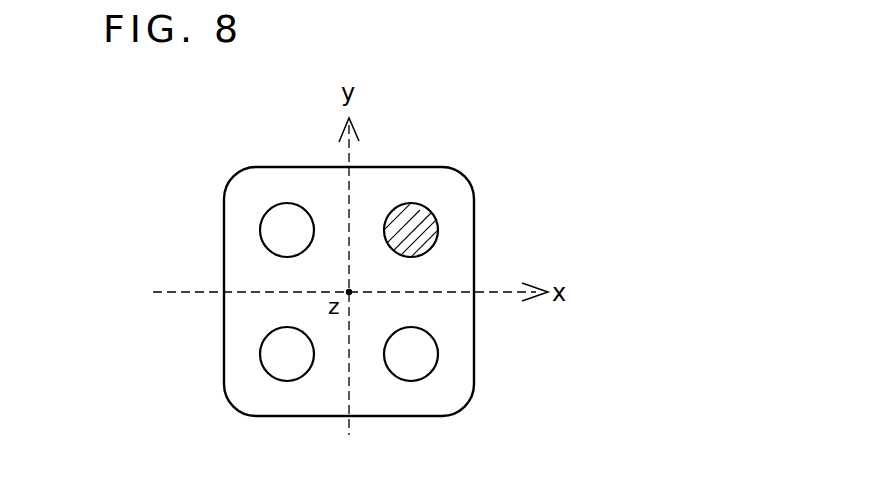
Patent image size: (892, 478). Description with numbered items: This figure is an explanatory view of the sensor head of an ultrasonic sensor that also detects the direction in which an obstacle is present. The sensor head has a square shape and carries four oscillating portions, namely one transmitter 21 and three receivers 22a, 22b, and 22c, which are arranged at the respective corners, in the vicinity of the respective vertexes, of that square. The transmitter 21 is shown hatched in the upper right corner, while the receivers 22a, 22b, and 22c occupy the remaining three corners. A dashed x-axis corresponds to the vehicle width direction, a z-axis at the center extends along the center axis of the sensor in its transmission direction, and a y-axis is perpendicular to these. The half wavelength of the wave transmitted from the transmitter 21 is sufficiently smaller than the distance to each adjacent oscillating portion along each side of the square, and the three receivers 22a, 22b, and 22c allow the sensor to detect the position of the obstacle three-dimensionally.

The transmitter 21 is at (438, 229).
The receiver 22a is at (260, 232).
The receiver 22b is at (260, 347).
The receiver 22c is at (438, 354).